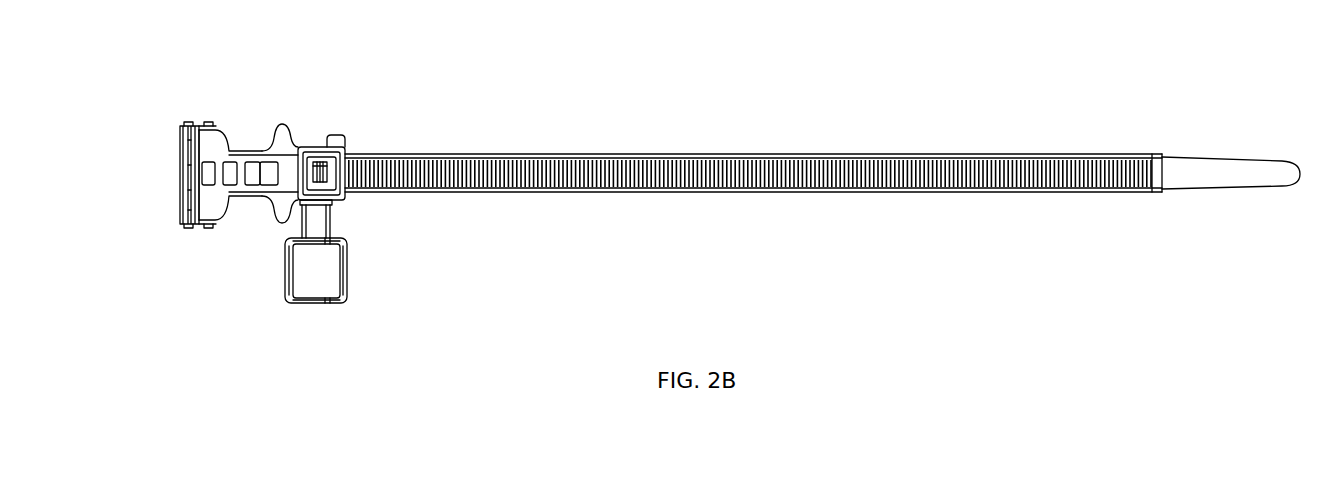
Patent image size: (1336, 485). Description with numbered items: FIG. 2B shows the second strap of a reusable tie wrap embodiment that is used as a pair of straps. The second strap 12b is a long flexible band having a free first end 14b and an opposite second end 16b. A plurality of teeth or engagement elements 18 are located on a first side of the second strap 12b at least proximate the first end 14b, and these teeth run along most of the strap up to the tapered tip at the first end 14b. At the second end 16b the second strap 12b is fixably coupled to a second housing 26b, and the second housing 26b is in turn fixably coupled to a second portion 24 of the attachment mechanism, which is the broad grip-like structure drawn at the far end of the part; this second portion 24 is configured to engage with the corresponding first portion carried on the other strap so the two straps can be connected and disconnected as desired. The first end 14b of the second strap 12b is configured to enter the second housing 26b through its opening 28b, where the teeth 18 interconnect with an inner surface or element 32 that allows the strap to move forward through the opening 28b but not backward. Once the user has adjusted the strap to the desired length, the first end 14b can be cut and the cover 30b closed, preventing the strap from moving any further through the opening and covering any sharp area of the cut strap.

The second end 16b is at (222, 98).
The second portion of the attachment mechanism 24 is at (220, 183).
The opening 28b is at (310, 160).
The second housing 26b is at (333, 150).
The inner surface or element 32 is at (321, 176).
The cover 30b is at (318, 288).
The second strap 12b is at (730, 160).
The teeth or engagement elements 18 is at (1133, 162).
The first end 14b is at (1231, 134).